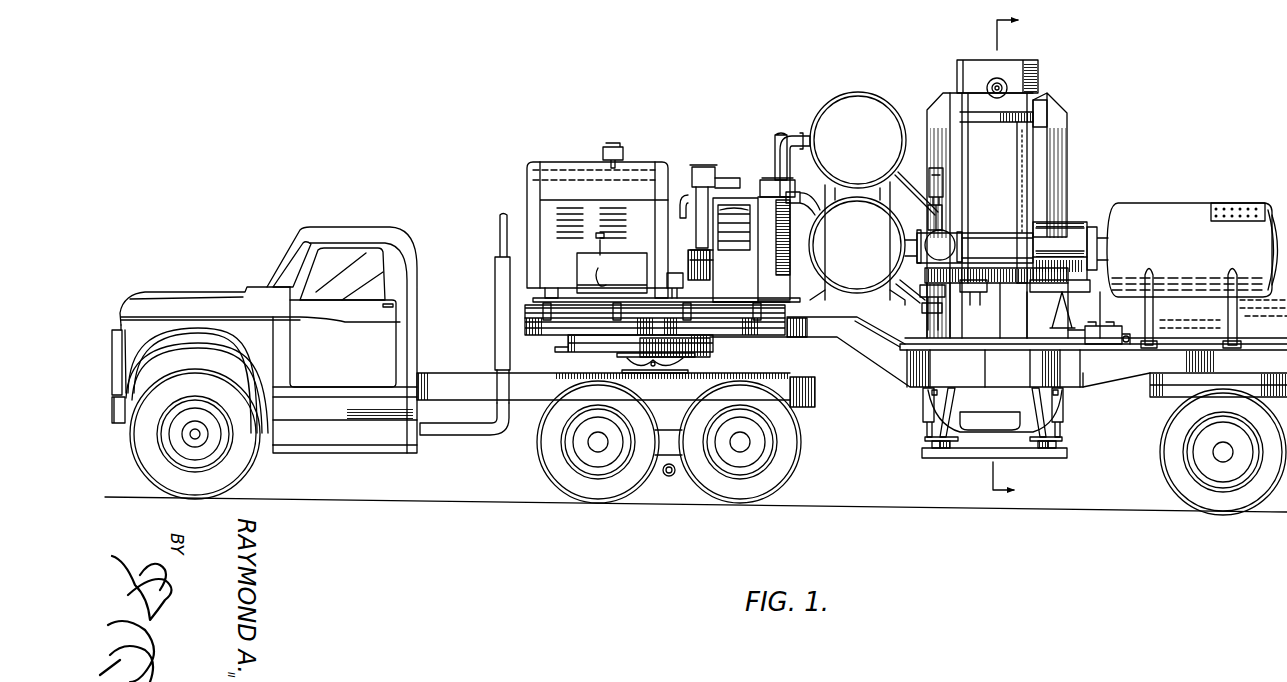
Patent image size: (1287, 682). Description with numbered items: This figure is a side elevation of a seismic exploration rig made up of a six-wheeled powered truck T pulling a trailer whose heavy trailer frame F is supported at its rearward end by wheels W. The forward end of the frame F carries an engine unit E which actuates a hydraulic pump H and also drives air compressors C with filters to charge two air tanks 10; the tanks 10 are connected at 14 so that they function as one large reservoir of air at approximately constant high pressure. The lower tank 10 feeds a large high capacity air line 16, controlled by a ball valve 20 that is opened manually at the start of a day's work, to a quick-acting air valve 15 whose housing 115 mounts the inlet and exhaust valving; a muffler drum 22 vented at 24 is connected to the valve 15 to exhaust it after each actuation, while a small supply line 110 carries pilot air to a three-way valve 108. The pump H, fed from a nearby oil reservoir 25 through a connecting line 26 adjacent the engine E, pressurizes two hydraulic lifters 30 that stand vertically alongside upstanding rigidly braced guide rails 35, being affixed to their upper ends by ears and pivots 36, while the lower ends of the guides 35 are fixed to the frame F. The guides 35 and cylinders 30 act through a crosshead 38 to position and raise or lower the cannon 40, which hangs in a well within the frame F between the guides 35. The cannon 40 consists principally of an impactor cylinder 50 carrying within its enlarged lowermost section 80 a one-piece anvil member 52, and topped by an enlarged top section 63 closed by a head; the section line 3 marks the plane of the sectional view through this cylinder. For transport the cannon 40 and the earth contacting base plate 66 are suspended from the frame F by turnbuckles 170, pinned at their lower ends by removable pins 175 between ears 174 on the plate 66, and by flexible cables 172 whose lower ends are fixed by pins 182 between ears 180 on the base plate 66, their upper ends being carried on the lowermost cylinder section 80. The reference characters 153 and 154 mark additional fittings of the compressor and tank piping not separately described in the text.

The truck T is at (244, 255).
The engine unit E is at (546, 160).
The air compressors C is at (764, 180).
The trailer frame F is at (858, 352).
The wheels W is at (1185, 486).
The hydraulic pump H is at (668, 281).
The section line 3- 3 is at (1019, 256).
The air tanks 10 is at (857, 198).
The tank connection 14 is at (853, 212).
The quick-acting air valve 15 is at (1070, 216).
The air line 16 is at (1002, 245).
The ball valve 20 is at (944, 238).
The muffler drum 22 is at (1197, 275).
The vent 24 is at (1228, 204).
The oil reservoir 25 is at (578, 275).
The connecting line 26 is at (603, 280).
The hydraulic lifters 30 is at (952, 206).
The guide rails 35 is at (940, 108).
The ears and pivots 36 is at (946, 186).
The crosshead 38 is at (1045, 105).
The cannon 40 is at (1044, 75).
The impactor cylinder 50 is at (1018, 156).
The anvil member 52 is at (1002, 418).
The top section 63 is at (965, 70).
The base plate 66 is at (973, 456).
The lowermost cylinder section 80 is at (1006, 400).
The three-way valve 108 is at (1108, 324).
The supply line 110 is at (1002, 344).
The valve housing 115 is at (1092, 240).
The air filter 153 is at (700, 167).
The pipe 154 is at (798, 133).
The turnbuckles 170 is at (922, 400).
The flexible cables 172 is at (975, 392).
The ears 174 is at (935, 446).
The removable pin 175 is at (925, 438).
The ears 180 is at (943, 450).
The pins 182 is at (1048, 452).